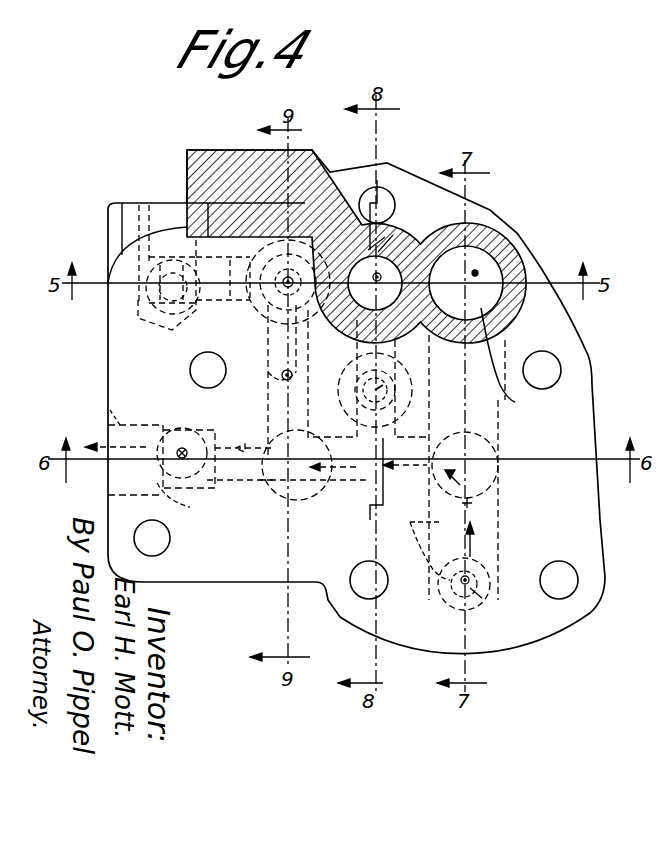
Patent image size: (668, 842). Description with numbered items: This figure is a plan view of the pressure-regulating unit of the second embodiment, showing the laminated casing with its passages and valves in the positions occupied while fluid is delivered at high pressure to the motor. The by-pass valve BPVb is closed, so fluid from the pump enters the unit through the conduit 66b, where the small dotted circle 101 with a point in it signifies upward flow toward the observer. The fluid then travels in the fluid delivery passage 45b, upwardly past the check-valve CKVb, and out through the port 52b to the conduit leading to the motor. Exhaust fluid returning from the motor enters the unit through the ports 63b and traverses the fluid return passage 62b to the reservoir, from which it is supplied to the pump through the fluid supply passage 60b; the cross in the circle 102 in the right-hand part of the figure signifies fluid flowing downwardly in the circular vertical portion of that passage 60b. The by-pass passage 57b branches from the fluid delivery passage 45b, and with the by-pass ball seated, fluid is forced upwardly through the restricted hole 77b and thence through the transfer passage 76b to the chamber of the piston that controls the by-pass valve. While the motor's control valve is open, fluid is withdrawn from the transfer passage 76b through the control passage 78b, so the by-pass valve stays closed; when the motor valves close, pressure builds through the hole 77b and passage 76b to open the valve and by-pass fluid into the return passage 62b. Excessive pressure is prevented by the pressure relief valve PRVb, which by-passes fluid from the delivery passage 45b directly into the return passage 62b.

The fluid return passage 62b is at (386, 245).
The cross in circle 102 is at (475, 273).
The by-pass valve BPVb is at (342, 180).
The ports 63b is at (140, 222).
The control passage 78b is at (190, 247).
The transfer passage 76b is at (268, 356).
The restricted hole 77b is at (352, 384).
The pressure relief valve PRVb is at (402, 378).
The by-pass passage 57b is at (303, 440).
The check-valve CKVb is at (265, 432).
The port 52b is at (110, 410).
The fluid delivery passage 45b is at (303, 509).
The fluid supply passage 60b is at (482, 407).
The conduit 66b is at (442, 603).
The small dotted circle 101 is at (482, 598).